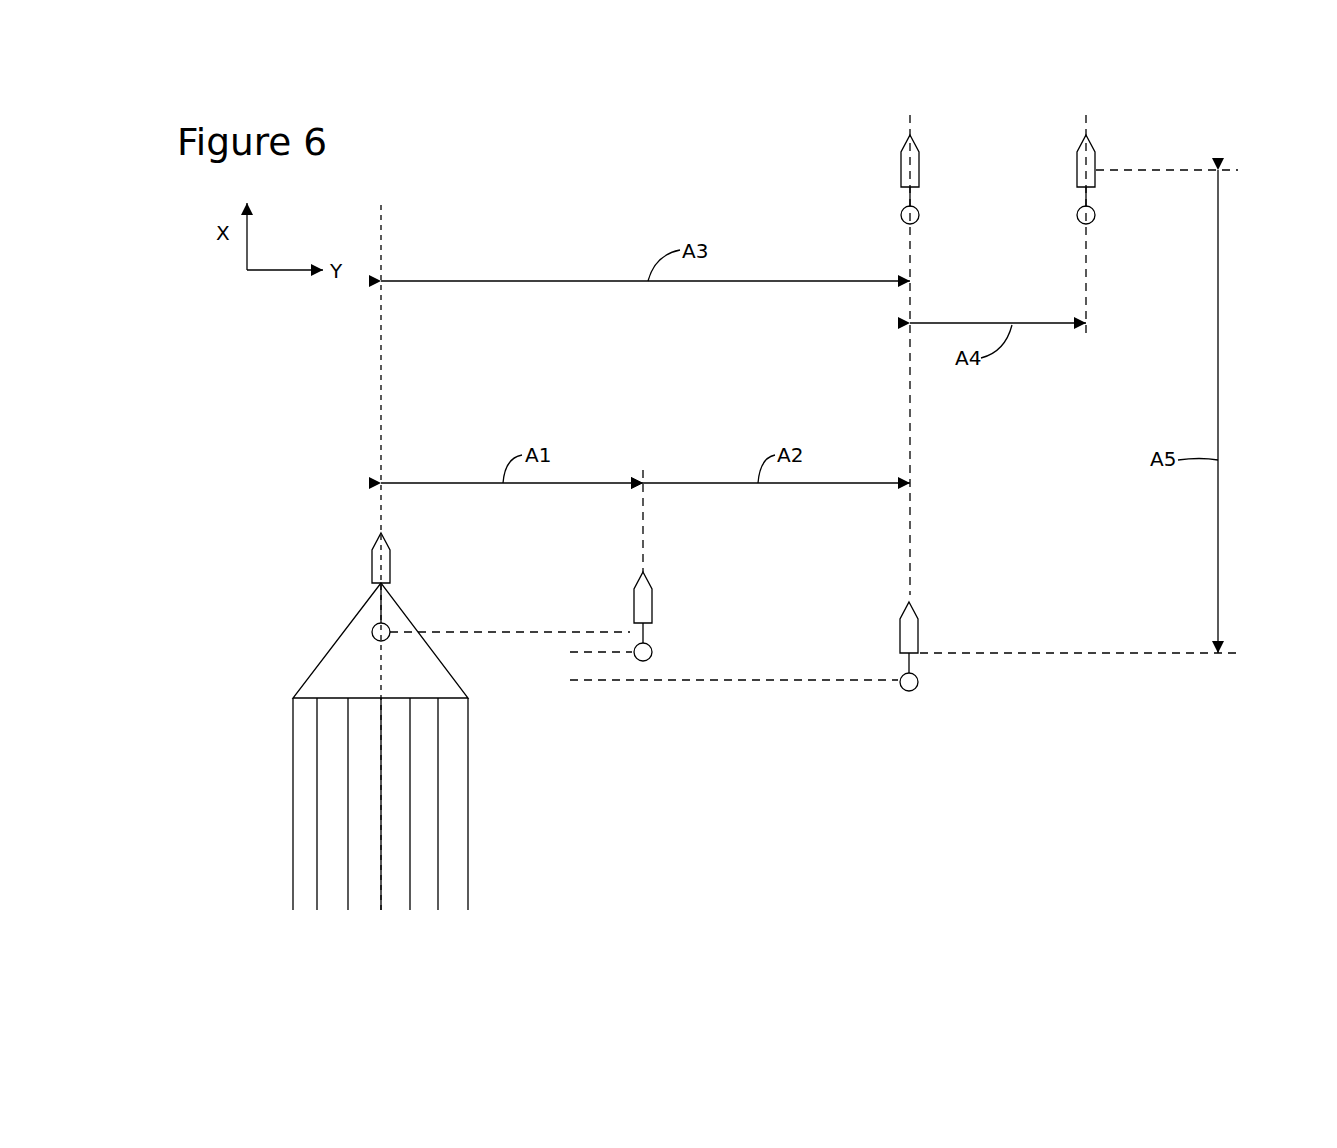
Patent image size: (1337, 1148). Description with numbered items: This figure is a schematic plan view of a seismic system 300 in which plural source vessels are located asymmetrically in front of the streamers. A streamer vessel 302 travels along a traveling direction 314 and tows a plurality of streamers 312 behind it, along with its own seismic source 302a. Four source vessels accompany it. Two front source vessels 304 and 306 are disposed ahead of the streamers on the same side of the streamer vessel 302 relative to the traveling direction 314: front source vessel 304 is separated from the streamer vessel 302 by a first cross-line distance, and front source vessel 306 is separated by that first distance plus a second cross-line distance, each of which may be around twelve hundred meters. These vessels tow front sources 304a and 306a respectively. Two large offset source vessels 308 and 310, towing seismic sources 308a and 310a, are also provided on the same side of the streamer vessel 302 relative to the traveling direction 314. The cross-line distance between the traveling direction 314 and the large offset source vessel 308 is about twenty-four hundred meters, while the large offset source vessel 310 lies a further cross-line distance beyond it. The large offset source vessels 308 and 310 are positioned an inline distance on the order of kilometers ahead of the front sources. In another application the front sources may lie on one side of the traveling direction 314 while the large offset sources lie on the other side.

The seismic system 300 is at (648, 169).
The streamer vessel 302 is at (371, 550).
The seismic source 302a is at (388, 626).
The front source vessel 304 is at (652, 603).
The front source 304a is at (652, 652).
The front source vessel 306 is at (918, 632).
The front source 306a is at (917, 686).
The large offset source vessel 308 is at (913, 138).
The seismic source 308a is at (916, 221).
The large offset source vessel 310 is at (1089, 138).
The seismic source 310a is at (1092, 221).
The streamers 312 is at (469, 841).
The traveling direction 314 is at (383, 350).